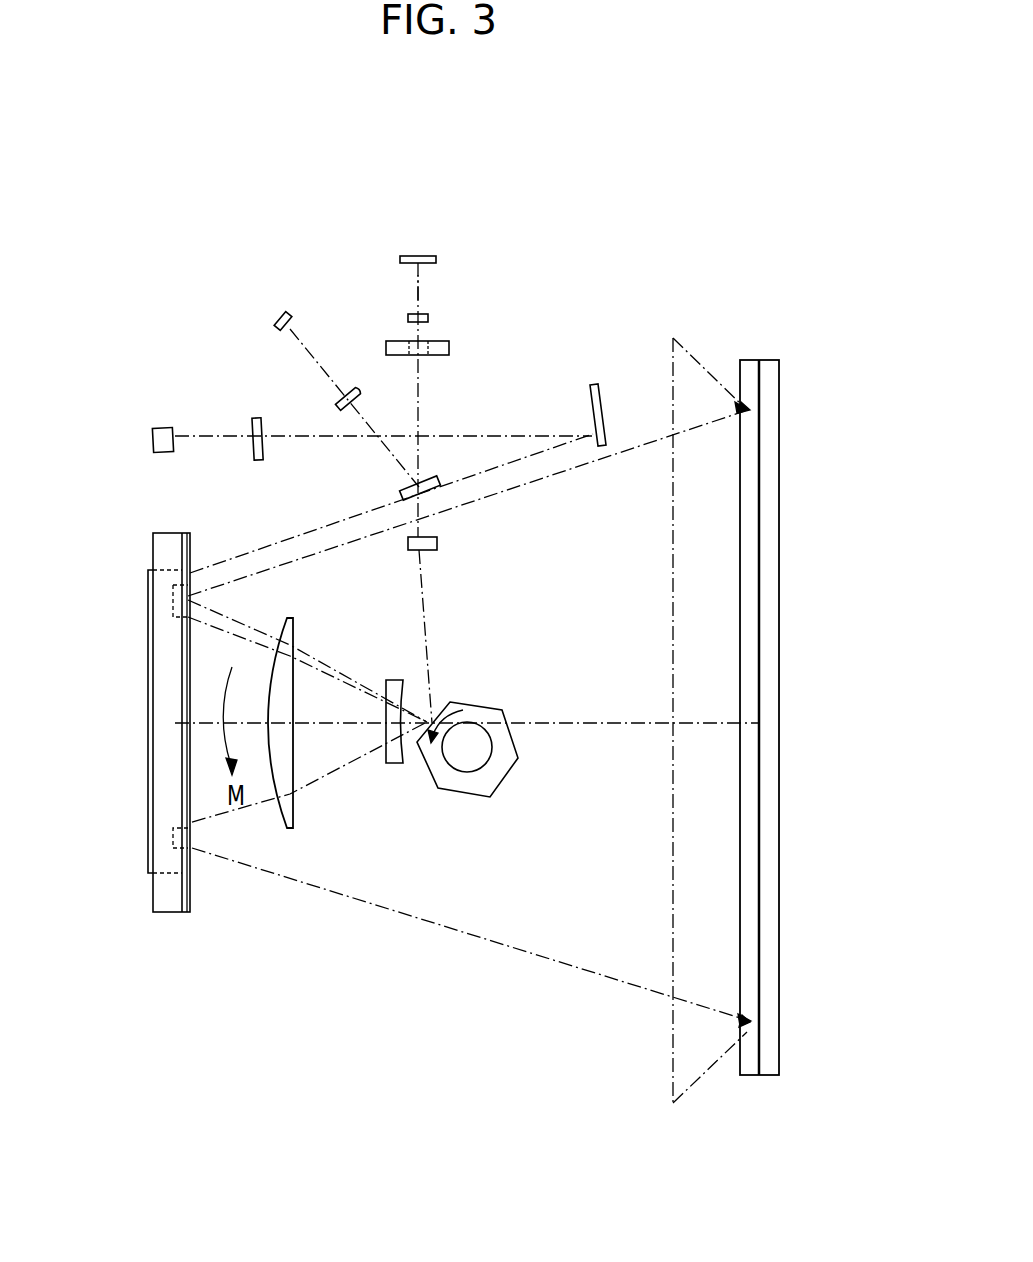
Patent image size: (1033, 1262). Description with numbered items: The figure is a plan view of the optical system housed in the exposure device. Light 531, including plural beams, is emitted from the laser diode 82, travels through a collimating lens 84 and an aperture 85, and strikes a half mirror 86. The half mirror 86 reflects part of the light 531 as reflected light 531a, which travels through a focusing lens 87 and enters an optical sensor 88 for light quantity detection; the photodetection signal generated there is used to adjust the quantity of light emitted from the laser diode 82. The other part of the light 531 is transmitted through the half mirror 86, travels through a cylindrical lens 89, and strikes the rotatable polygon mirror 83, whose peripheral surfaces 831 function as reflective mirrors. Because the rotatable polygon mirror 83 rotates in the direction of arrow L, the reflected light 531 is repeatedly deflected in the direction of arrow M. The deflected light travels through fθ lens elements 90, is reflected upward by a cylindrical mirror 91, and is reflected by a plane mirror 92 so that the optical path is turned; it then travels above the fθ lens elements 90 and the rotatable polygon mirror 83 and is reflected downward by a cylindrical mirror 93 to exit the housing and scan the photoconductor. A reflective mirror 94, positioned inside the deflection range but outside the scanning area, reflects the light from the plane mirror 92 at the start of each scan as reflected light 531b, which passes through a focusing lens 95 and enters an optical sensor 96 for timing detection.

The laser diode 82 is at (433, 256).
The light 531 is at (418, 292).
The collimating lens 84 is at (423, 313).
The aperture 85 is at (442, 340).
The optical sensor 88 is at (285, 312).
The focusing lens 87 is at (352, 388).
The half mirror 86 is at (428, 476).
The reflected light 531a is at (396, 463).
The reflected light 531b is at (525, 434).
The cylindrical lens 89 is at (437, 542).
The focusing lens 95 is at (253, 420).
The optical sensor 96 is at (160, 437).
The reflective mirror 94 is at (594, 384).
The cylindrical mirror 93 is at (748, 368).
The plane mirror 92 is at (165, 793).
The cylindrical mirror 91 is at (182, 891).
The fθ lens elements 90 is at (395, 763).
The rotatable polygon mirror 83 is at (500, 742).
The peripheral surfaces 831 is at (507, 778).